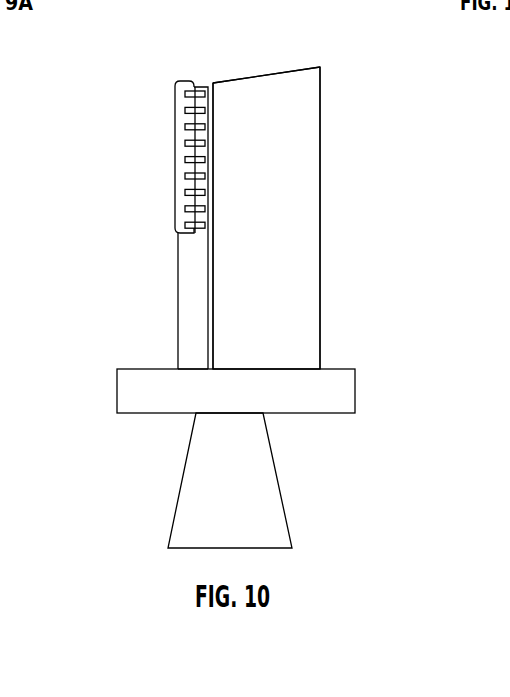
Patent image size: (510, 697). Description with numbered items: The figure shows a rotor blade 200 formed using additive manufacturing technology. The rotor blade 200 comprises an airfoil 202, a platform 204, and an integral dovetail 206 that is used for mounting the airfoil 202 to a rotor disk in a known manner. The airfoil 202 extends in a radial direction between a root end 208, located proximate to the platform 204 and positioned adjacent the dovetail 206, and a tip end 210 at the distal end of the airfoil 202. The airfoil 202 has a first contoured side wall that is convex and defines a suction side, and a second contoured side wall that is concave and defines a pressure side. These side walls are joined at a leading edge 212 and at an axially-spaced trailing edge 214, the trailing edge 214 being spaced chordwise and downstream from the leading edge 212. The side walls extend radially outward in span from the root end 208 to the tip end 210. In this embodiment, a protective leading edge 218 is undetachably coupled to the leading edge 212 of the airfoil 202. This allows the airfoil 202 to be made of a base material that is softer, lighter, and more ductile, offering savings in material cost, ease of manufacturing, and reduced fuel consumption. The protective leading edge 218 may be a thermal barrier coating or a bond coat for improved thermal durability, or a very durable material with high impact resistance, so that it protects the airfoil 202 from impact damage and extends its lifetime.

The rotor blade 200 is at (147, 63).
The airfoil 202 is at (302, 223).
The platform 204 is at (148, 393).
The integral dovetail 206 is at (197, 497).
The root end 208 is at (177, 358).
The tip end 210 is at (322, 73).
The leading edge 212 is at (183, 259).
The trailing edge 214 is at (320, 312).
The protective leading edge 218 is at (185, 127).